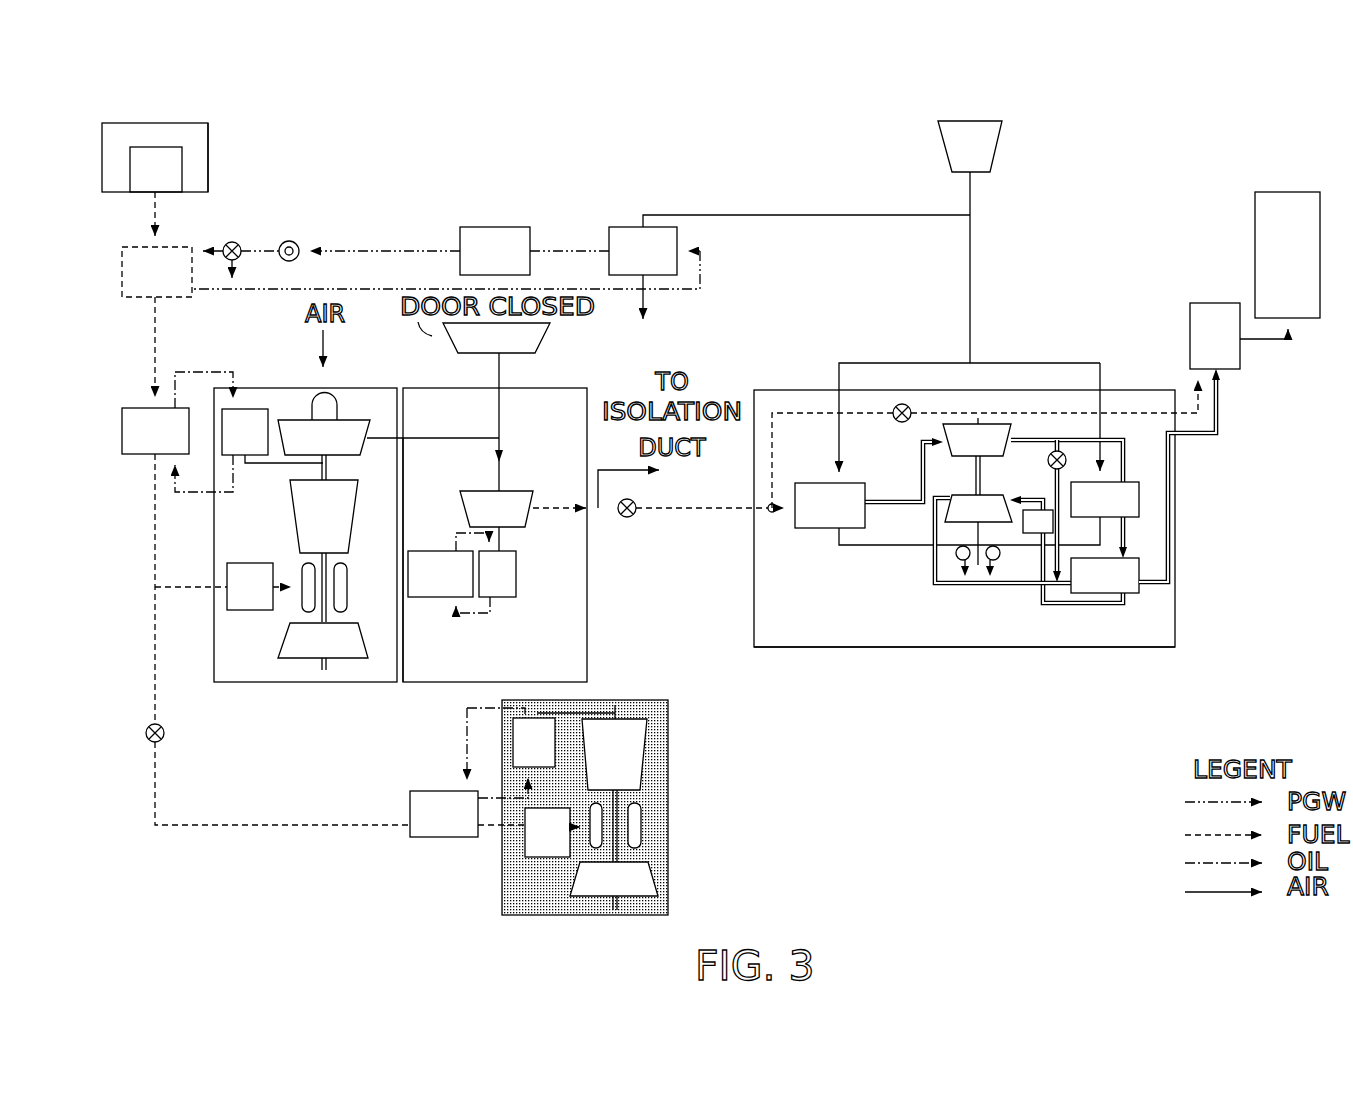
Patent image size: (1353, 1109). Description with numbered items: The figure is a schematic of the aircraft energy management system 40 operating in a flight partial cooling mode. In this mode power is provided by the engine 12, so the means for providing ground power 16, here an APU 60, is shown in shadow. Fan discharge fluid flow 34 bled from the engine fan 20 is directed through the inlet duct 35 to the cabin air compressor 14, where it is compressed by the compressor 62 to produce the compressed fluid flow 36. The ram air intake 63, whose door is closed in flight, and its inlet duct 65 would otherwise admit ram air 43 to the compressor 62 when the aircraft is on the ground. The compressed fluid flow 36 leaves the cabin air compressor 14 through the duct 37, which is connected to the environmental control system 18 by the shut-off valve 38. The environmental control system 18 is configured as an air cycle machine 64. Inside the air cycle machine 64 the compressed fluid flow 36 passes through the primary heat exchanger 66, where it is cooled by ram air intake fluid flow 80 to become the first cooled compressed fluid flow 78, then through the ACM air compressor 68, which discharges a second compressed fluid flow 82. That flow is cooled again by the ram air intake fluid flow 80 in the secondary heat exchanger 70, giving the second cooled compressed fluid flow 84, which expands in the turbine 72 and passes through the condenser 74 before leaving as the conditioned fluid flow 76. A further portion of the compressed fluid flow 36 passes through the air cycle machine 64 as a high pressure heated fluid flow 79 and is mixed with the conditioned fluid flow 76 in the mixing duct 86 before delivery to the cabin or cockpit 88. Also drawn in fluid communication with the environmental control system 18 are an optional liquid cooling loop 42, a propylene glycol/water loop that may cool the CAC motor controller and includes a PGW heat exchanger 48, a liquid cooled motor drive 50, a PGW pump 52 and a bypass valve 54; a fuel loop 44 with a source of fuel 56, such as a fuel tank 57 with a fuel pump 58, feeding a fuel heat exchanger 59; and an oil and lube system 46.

The gas turbine engine 12 is at (305, 551).
The cabin air compressor 14 is at (477, 571).
The means for providing ground power 16 is at (624, 807).
The environmental control system 18 is at (880, 647).
The engine fan 20 is at (357, 418).
The fan discharge fluid flow 34 is at (431, 438).
The inlet duct 35 is at (418, 440).
The compressed fluid flow 36 is at (608, 513).
The duct 37 is at (700, 508).
The shut-off valve 38 is at (633, 516).
The energy management system 40 is at (1037, 492).
The liquid cooling loop 42 is at (581, 235).
The ram air 43 is at (499, 425).
The fuel loop 44 is at (120, 537).
The oil and lube system 46 is at (434, 746).
The PGW heat exchanger 48 is at (622, 227).
The liquid cooled motor drive 50 is at (496, 227).
The PGW pump 52 is at (289, 240).
The bypass valve 54 is at (233, 243).
The source of fuel 56 is at (180, 123).
The fuel tank 57 is at (210, 150).
The fuel pump 58 is at (150, 167).
The fuel heat exchanger 59 is at (122, 275).
The APU 60 is at (668, 830).
The compressor 62 is at (523, 491).
The ram air intake 63 is at (545, 338).
The air cycle machine 64 is at (963, 647).
The inlet duct 65 is at (500, 375).
The primary heat exchanger 66 is at (812, 528).
The ACM air compressor 68 is at (960, 423).
The secondary heat exchanger 70 is at (1140, 502).
The turbine 72 is at (1003, 497).
The condenser 74 is at (1062, 573).
The conditioned fluid flow 76 is at (1170, 572).
The first cooled compressed fluid flow 78 is at (895, 497).
The high pressure heated fluid flow 79 is at (1137, 412).
The ram air intake fluid flow 80 is at (973, 257).
The second compressed fluid flow 82 is at (1050, 445).
The second cooled compressed fluid flow 84 is at (1095, 605).
The mixing duct 86 is at (1190, 318).
The aircraft cabin or cockpit 88 is at (1255, 228).